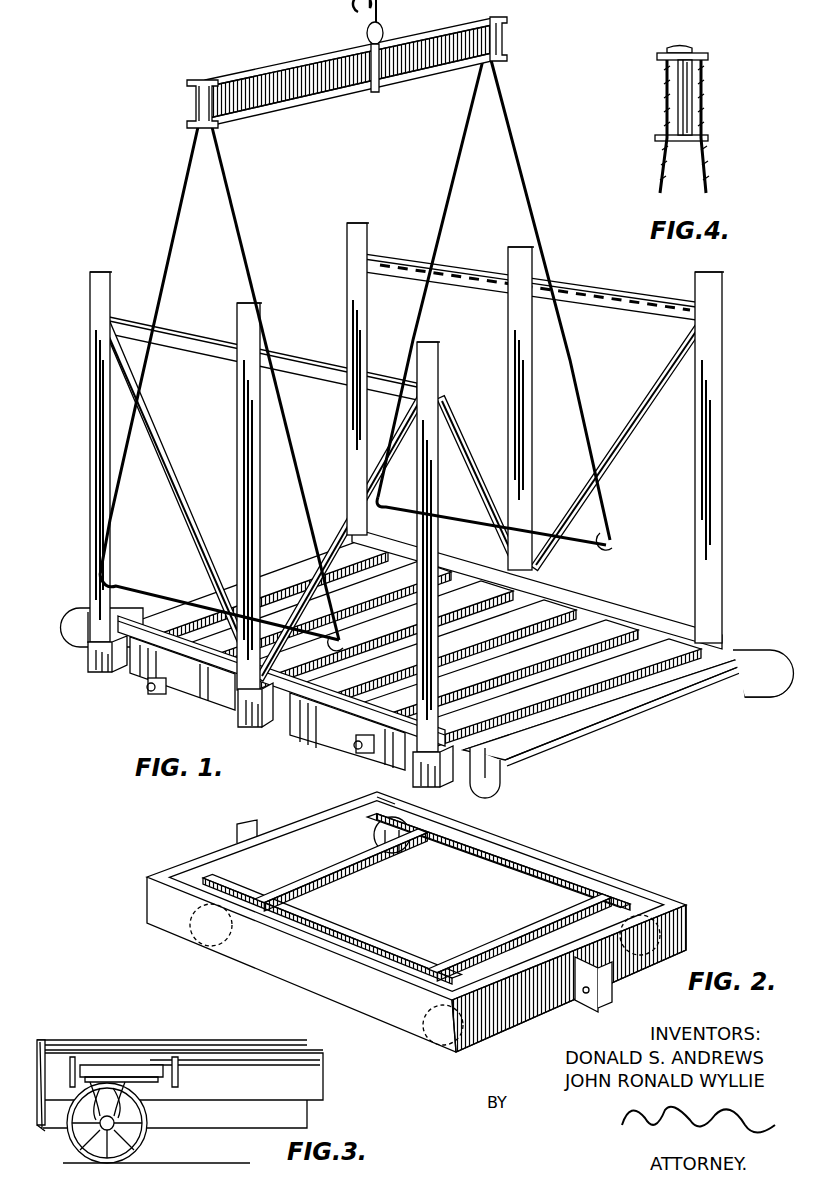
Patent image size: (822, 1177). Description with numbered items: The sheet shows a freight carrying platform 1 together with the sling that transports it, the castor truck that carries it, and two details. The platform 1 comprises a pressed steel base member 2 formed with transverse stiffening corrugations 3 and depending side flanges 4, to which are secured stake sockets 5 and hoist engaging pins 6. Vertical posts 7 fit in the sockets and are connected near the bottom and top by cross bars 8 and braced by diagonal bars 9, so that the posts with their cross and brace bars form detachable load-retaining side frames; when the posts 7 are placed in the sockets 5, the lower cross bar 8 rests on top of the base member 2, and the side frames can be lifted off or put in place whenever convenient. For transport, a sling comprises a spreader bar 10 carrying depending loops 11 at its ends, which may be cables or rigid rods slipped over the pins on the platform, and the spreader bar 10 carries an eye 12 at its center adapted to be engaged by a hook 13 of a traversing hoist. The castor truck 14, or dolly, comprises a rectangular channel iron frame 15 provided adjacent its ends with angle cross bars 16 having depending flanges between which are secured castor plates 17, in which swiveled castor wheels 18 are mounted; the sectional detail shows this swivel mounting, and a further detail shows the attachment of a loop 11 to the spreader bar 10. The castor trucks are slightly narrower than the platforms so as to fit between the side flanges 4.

In FIG. 1, the freight carrying platform 1 is at (471, 624).
In FIG. 1, the pressed steel base member 2 is at (607, 713).
In FIG. 1, the transverse stiffening corrugations 3 is at (542, 576).
In FIG. 1, the depending side flanges 4 is at (203, 693).
In FIG. 1, the stake sockets 5 is at (113, 673).
In FIG. 1, the hoist engaging pins 6 is at (157, 690).
In FIG. 1, the vertical posts 7 is at (101, 271).
In FIG. 1, the cross bars 8 is at (307, 363).
In FIG. 1, the diagonal bars 9 is at (165, 462).
In FIG. 1, the spreader bar 10 is at (282, 78).
In FIG. 4, the spreader bar 10 is at (700, 55).
In FIG. 1, the depending loops 11 is at (180, 200).
In FIG. 4, the depending loops 11 is at (703, 110).
In FIG. 1, the eye 12 is at (382, 30).
In FIG. 1, the hook 13 is at (352, 14).
In FIG. 2, the castor truck 14 is at (370, 922).
In FIG. 3, the castor truck 14 is at (180, 1069).
In FIG. 2, the rectangular channel iron frame 15 is at (240, 842).
In FIG. 3, the rectangular channel iron frame 15 is at (53, 1040).
In FIG. 2, the angle cross bars 16 is at (297, 835).
In FIG. 3, the angle cross bars 16 is at (72, 1065).
In FIG. 2, the castor plates 17 is at (357, 805).
In FIG. 3, the castor plates 17 is at (125, 1065).
In FIG. 2, the swiveled castor wheels 18 is at (398, 853).
In FIG. 3, the swiveled castor wheels 18 is at (137, 1138).